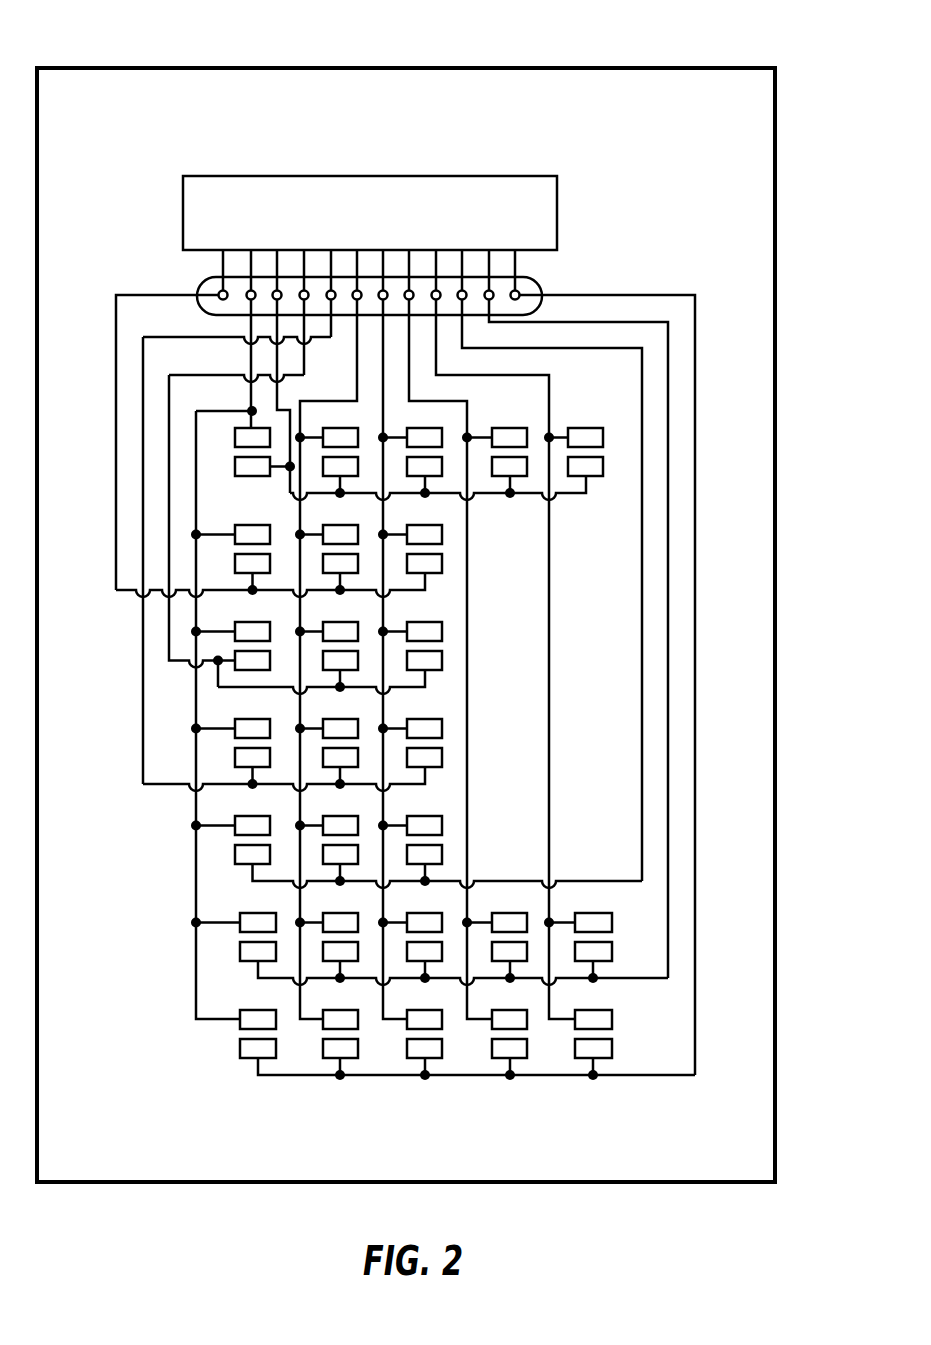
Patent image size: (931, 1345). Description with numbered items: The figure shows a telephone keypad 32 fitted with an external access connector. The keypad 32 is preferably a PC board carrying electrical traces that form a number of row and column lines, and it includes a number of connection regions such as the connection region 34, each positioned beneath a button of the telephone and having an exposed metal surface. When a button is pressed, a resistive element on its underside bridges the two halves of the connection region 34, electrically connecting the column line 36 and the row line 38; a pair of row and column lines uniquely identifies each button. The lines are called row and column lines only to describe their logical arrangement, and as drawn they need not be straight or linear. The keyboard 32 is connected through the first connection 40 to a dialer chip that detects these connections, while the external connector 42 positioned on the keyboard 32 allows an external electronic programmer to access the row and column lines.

The keypad 32 is at (692, 60).
The connection region 34 is at (455, 711).
The column line 36 is at (388, 710).
The row line 38 is at (178, 787).
The first connection 40 is at (540, 283).
The external connector 42 is at (507, 176).